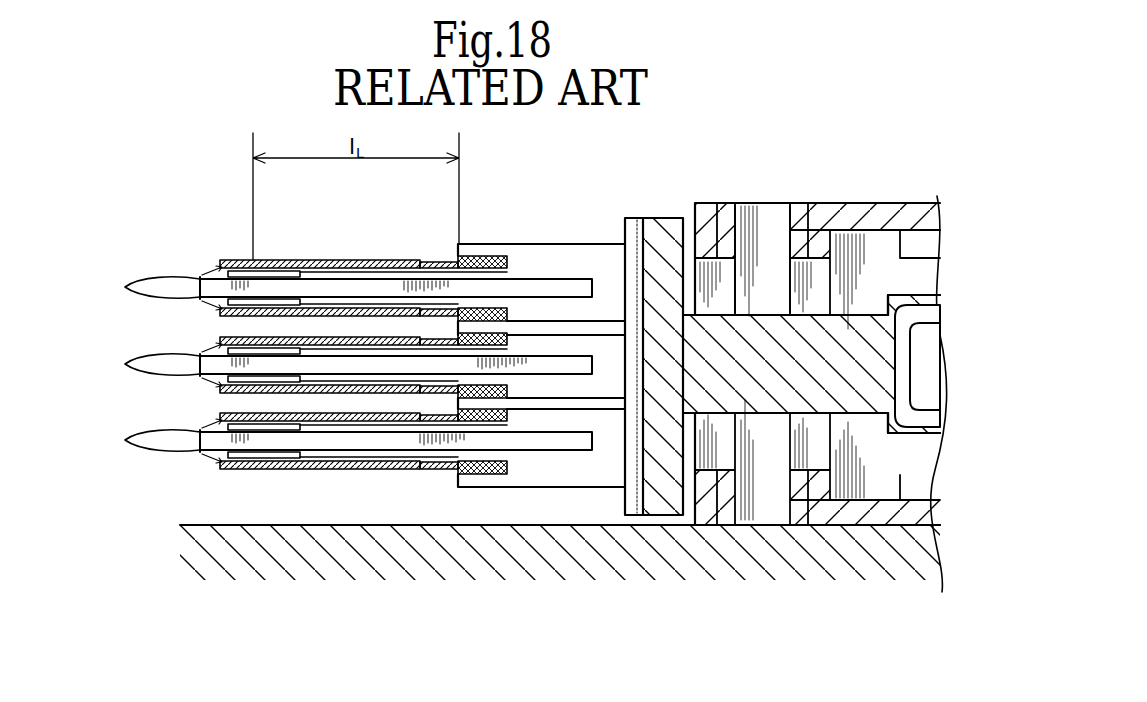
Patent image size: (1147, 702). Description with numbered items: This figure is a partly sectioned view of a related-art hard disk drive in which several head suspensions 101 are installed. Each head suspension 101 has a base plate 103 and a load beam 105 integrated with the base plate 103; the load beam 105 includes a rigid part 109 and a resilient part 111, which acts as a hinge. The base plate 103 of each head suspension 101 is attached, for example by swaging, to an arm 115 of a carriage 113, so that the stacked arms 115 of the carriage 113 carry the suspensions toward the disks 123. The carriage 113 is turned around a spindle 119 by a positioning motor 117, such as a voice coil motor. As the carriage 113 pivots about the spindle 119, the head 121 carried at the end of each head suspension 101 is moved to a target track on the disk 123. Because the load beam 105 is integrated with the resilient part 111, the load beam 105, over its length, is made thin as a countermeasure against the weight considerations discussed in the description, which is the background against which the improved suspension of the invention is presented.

The head suspension 101 is at (304, 326).
The base plate 103 is at (475, 256).
The load beam 105 is at (291, 249).
The rigid part 109 is at (380, 310).
The resilient part 111 is at (437, 258).
The carriage 113 is at (869, 175).
The arm 115 is at (607, 327).
The positioning motor 117 is at (925, 194).
The spindle 119 is at (758, 204).
The head 121 is at (137, 364).
The disk 123 is at (547, 370).